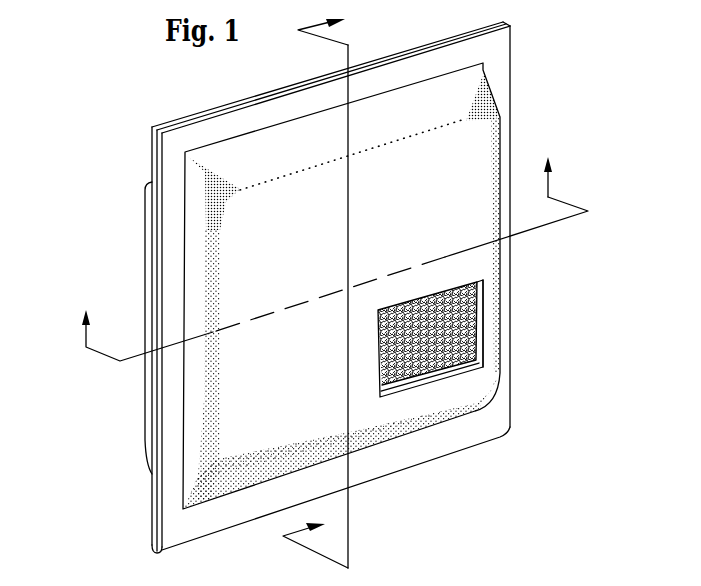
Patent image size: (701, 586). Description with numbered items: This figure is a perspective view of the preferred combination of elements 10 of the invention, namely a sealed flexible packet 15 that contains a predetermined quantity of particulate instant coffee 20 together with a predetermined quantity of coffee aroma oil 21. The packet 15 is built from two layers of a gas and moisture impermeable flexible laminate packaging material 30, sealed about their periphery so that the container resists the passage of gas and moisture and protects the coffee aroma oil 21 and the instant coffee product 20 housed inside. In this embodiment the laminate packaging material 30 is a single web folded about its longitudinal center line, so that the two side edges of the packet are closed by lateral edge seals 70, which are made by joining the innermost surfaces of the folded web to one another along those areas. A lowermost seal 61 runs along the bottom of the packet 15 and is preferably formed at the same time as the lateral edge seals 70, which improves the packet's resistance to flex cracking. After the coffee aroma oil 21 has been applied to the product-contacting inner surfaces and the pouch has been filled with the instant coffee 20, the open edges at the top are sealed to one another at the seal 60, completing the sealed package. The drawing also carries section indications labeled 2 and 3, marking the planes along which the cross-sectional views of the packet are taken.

The combination of elements 10 is at (110, 108).
The sealed flexible packet 15 is at (208, 111).
The seal of open edges 60 is at (397, 72).
The lowermost seal 61 is at (450, 435).
The lateral edge seals 70 is at (173, 182).
The laminate packaging material 30 is at (480, 293).
The coffee aroma oil 21 is at (476, 311).
The particulate instant coffee 20 is at (460, 348).
The section line 2- 2 is at (320, 292).
The section line 3- 3 is at (334, 244).